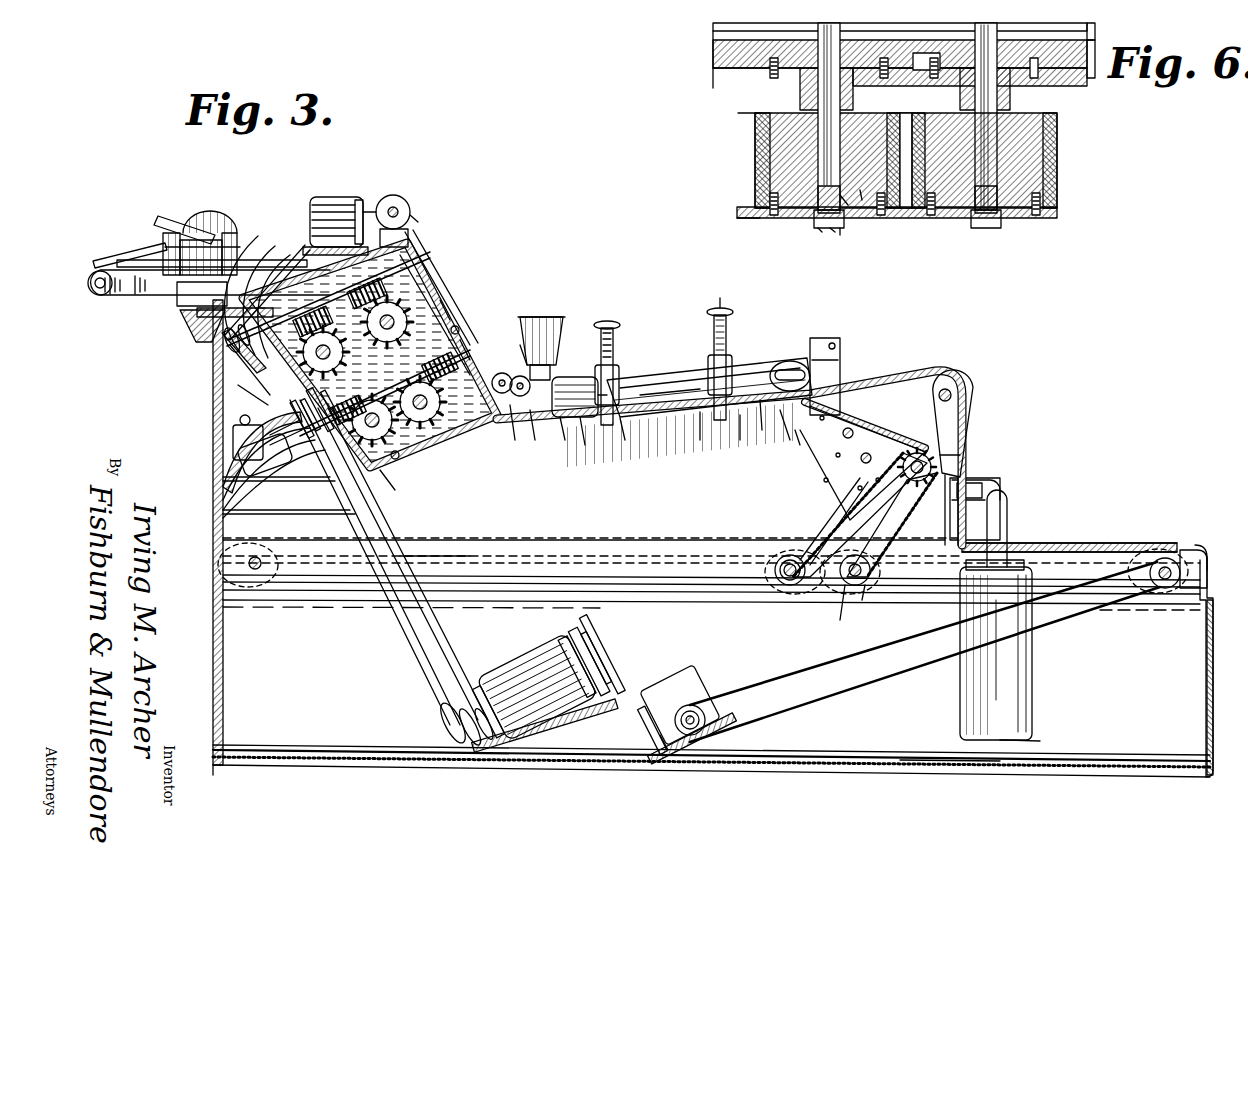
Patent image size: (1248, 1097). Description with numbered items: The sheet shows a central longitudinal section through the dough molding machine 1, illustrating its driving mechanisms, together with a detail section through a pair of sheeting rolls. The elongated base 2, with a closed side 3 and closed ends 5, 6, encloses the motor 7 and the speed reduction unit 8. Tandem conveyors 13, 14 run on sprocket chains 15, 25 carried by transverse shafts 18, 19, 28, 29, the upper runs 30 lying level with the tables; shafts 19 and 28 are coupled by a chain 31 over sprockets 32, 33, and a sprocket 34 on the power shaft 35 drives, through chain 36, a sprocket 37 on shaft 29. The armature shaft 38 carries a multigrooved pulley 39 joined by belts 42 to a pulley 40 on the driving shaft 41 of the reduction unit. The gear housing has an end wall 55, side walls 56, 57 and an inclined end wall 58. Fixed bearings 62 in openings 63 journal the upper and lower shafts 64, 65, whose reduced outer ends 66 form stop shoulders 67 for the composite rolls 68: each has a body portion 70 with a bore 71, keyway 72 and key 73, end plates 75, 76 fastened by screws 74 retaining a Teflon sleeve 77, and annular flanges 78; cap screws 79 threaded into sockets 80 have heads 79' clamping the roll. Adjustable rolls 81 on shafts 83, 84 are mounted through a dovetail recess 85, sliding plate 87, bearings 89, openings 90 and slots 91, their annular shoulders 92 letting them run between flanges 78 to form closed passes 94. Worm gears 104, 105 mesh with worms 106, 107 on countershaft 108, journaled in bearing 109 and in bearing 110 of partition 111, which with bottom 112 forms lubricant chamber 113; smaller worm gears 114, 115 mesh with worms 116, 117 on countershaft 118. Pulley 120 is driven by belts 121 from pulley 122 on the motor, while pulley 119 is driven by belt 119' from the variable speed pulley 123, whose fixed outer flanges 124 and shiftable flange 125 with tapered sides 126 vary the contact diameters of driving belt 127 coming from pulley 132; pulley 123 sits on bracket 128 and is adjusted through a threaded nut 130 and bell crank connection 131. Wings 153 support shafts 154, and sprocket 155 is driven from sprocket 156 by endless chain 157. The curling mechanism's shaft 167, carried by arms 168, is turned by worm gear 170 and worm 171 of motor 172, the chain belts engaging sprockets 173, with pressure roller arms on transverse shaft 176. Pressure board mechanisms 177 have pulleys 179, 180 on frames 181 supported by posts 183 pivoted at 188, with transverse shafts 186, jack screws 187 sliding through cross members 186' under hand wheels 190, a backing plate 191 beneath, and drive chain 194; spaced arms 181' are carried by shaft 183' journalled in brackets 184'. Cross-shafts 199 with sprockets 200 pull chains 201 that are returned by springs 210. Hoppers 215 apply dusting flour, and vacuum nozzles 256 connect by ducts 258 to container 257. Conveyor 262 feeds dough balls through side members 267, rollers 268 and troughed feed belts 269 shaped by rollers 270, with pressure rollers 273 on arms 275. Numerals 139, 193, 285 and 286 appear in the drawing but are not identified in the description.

In FIG. 3, the dough molding machine 1 is at (1207, 540).
In FIG. 3, the elongated base 2 is at (935, 762).
In FIG. 3, the closed side 3 is at (1030, 742).
In FIG. 3, the closed end 5 is at (215, 773).
In FIG. 3, the closed end 6 is at (1209, 565).
In FIG. 3, the motor 7 is at (525, 650).
In FIG. 3, the speed reduction unit 8 is at (688, 668).
In FIG. 3, the tandem conveyors 13 is at (610, 540).
In FIG. 3, the conveyors 14 is at (920, 540).
In FIG. 3, the sprocket chains 15 is at (700, 540).
In FIG. 3, the transverse shaft 18 is at (248, 563).
In FIG. 3, the transverse shaft 19 is at (790, 555).
In FIG. 3, the sprocket chains 25 is at (1025, 550).
In FIG. 3, the transverse shaft 28 is at (848, 600).
In FIG. 3, the transverse shaft 29 is at (1170, 548).
In FIG. 3, the upper runs 30 is at (975, 518).
In FIG. 3, the chain 31 is at (815, 550).
In FIG. 3, the sprocket 32 is at (778, 560).
In FIG. 3, the sprocket 33 is at (860, 562).
In FIG. 3, the sprocket 34 is at (695, 735).
In FIG. 3, the power shaft 35 is at (686, 730).
In FIG. 3, the chain 36 is at (890, 672).
In FIG. 3, the sprocket 37 is at (1165, 590).
In FIG. 3, the armature shaft 38 is at (470, 745).
In FIG. 3, the multigrooved pulley 39 is at (600, 655).
In FIG. 3, the pulley 40 is at (640, 745).
In FIG. 3, the driving shaft 41 is at (660, 748).
In FIG. 3, the belts 42 is at (615, 672).
In FIG. 3, the end wall 55 is at (268, 455).
In FIG. 3, the side wall 56 is at (255, 240).
In FIG. 6, the side wall 57 is at (735, 55).
In FIG. 3, the inclined end wall 58 is at (425, 290).
In FIG. 6, the fixed bearings 62 is at (773, 74).
In FIG. 6, the openings 63 is at (740, 28).
In FIG. 6, the upper transverse shaft 64 is at (810, 96).
In FIG. 3, the upper transverse shaft 64 is at (303, 245).
In FIG. 3, the lower transverse shaft 65 is at (400, 458).
In FIG. 6, the outer ends 66 is at (822, 160).
In FIG. 6, the stop shoulders 67 is at (790, 132).
In FIG. 6, the composite rolls 68 is at (770, 182).
In FIG. 6, the cylindrical body portion 70 is at (862, 200).
In FIG. 6, the bores 71 is at (842, 216).
In FIG. 6, the keyways 72 is at (870, 212).
In FIG. 6, the keys 73 is at (925, 212).
In FIG. 6, the screws 74 is at (815, 226).
In FIG. 6, the end plate 75 is at (750, 114).
In FIG. 6, the end plate 76 is at (773, 222).
In FIG. 6, the sleeves 77 is at (745, 211).
In FIG. 6, the annular flanges 78 is at (750, 222).
In FIG. 6, the cap screws 79 is at (817, 254).
In FIG. 6, the heads 79' is at (851, 261).
In FIG. 6, the internally threaded sockets 80 is at (820, 229).
In FIG. 6, the adjustable rolls 81 is at (1060, 167).
In FIG. 6, the shaft 83 is at (1012, 100).
In FIG. 3, the shaft 83 is at (450, 318).
In FIG. 3, the shaft 84 is at (410, 425).
In FIG. 6, the dovetail recess 85 is at (1090, 37).
In FIG. 6, the plate 87 is at (885, 78).
In FIG. 6, the bearings 89 is at (1093, 78).
In FIG. 6, the openings 90 is at (975, 85).
In FIG. 6, the slots 91 is at (934, 80).
In FIG. 6, the annular shoulders 92 is at (1040, 218).
In FIG. 6, the passes 94 is at (920, 205).
In FIG. 3, the worm gear 104 is at (262, 392).
In FIG. 3, the worm gear 105 is at (418, 270).
In FIG. 3, the worm 106 is at (276, 268).
In FIG. 3, the worm 107 is at (410, 212).
In FIG. 3, the countershaft 108 is at (415, 245).
In FIG. 3, the bearing 109 is at (430, 248).
In FIG. 3, the bearing 110 is at (218, 318).
In FIG. 3, the partition 111 is at (250, 360).
In FIG. 3, the bottom 112 is at (470, 430).
In FIG. 3, the lubricant chamber 113 is at (258, 262).
In FIG. 3, the smaller worm gear 114 is at (385, 490).
In FIG. 3, the smaller worm gear 115 is at (465, 345).
In FIG. 3, the worm 116 is at (262, 405).
In FIG. 3, the worm 117 is at (524, 345).
In FIG. 3, the countershaft 118 is at (548, 316).
In FIG. 3, the pulley 119 is at (210, 327).
In FIG. 3, the belt 119' is at (183, 351).
In FIG. 3, the pulley 120 is at (380, 470).
In FIG. 3, the belts 121 is at (420, 556).
In FIG. 3, the pulley 122 is at (490, 688).
In FIG. 3, the variable speed pulley 123 is at (260, 450).
In FIG. 3, the fixed outer flanges 124 is at (270, 462).
In FIG. 3, the axially shiftable flange 125 is at (292, 490).
In FIG. 3, the tapered sides 126 is at (283, 475).
In FIG. 3, the driving belt 127 is at (395, 620).
In FIG. 3, the bracket 128 is at (240, 455).
In FIG. 3, the threaded nut 130 is at (240, 420).
In FIG. 3, the bell crank connection 131 is at (235, 436).
In FIG. 3, the pulley 132 is at (485, 745).
In FIG. 3, the bolt 139 is at (458, 325).
In FIG. 3, the wings 153 is at (823, 418).
In FIG. 3, the shafts 154 is at (950, 452).
In FIG. 3, the sprocket 155 is at (935, 468).
In FIG. 3, the sprocket 156 is at (688, 748).
In FIG. 3, the endless chain 157 is at (875, 492).
In FIG. 3, the shaft 167 is at (515, 440).
In FIG. 3, the arms 168 is at (535, 440).
In FIG. 3, the worm gear 170 is at (560, 375).
In FIG. 3, the worm 171 is at (565, 440).
In FIG. 3, the motor 172 is at (585, 445).
In FIG. 3, the sprockets 173 is at (518, 376).
In FIG. 3, the transverse shaft 176 is at (500, 373).
In FIG. 3, the pressure board mechanisms 177 is at (665, 425).
In FIG. 3, the pulley 179 is at (650, 395).
In FIG. 3, the pulley 180 is at (830, 336).
In FIG. 3, the frames 181 is at (710, 332).
In FIG. 3, the spaced arms 181' is at (785, 450).
In FIG. 3, the posts 183 is at (742, 437).
In FIG. 3, the transverse shaft 183' is at (830, 354).
In FIG. 3, the brackets 184' is at (812, 326).
In FIG. 3, the transverse shafts 186 is at (736, 456).
In FIG. 3, the cross members 186' is at (615, 362).
In FIG. 3, the jack screws 187 is at (730, 358).
In FIG. 3, the pivotal connection 188 is at (700, 440).
In FIG. 3, the hand wheels 190 is at (730, 312).
In FIG. 3, the backing plate 191 is at (623, 432).
In FIG. 3, the screw 193 is at (800, 445).
In FIG. 3, the chain 194 is at (598, 390).
In FIG. 3, the cross-shafts 199 is at (950, 390).
In FIG. 3, the sprockets 200 is at (965, 395).
In FIG. 3, the chains 201 is at (970, 420).
In FIG. 3, the springs 210 is at (885, 380).
In FIG. 3, the hoppers 215 is at (555, 315).
In FIG. 3, the vacuum nozzles 256 is at (985, 490).
In FIG. 3, the container 257 is at (1035, 685).
In FIG. 3, the ducts 258 is at (1010, 497).
In FIG. 3, the conveyor 262 is at (92, 292).
In FIG. 3, the side members 267 is at (180, 298).
In FIG. 3, the rollers 268 is at (95, 278).
In FIG. 3, the feed belts 269 is at (125, 262).
In FIG. 3, the rollers 270 is at (158, 245).
In FIG. 3, the pressure rollers 273 is at (200, 215).
In FIG. 3, the arms 275 is at (180, 200).
In FIG. 3, the pulley 285 is at (393, 196).
In FIG. 3, the motor 286 is at (330, 200).